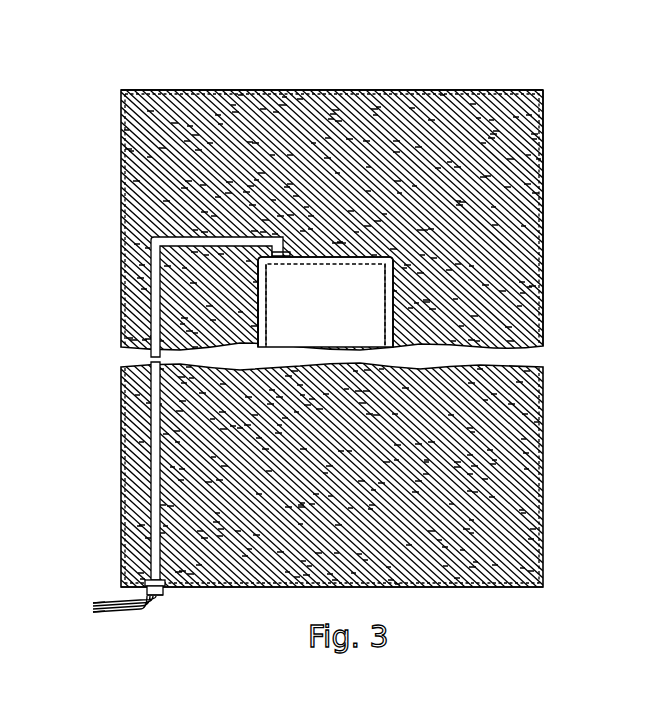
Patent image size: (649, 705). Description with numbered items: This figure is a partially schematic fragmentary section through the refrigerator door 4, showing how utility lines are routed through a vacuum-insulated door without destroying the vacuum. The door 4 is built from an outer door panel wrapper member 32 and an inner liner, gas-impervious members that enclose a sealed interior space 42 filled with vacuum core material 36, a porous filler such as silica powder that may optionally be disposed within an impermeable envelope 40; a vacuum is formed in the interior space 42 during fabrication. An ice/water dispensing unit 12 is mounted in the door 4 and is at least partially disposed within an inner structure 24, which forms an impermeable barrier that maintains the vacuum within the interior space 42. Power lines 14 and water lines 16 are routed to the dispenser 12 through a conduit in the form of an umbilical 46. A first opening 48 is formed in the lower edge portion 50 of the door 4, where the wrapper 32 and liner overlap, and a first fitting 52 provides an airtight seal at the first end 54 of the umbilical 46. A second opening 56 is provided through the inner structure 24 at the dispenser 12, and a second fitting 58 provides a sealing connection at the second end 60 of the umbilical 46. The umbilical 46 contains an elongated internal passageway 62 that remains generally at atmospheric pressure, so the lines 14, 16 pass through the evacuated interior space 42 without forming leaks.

The door 4 is at (374, 329).
The ice/water dispensing unit 12 is at (325, 299).
The power line 14 is at (110, 604).
The water line 16 is at (120, 613).
The inner structure 24 is at (387, 292).
The outer door panel wrapper member 32 is at (472, 88).
The vacuum core material 36 is at (520, 148).
The impermeable envelope 40 is at (545, 110).
The interior space 42 is at (527, 283).
The umbilical 46 is at (165, 408).
The first opening 48 is at (168, 588).
The lower edge portion 50 is at (207, 587).
The first fitting 52 is at (168, 594).
The first end 54 is at (163, 597).
The second opening 56 is at (285, 265).
The second fitting 58 is at (269, 267).
The second end 60 is at (280, 267).
The internal passageway 62 is at (150, 452).